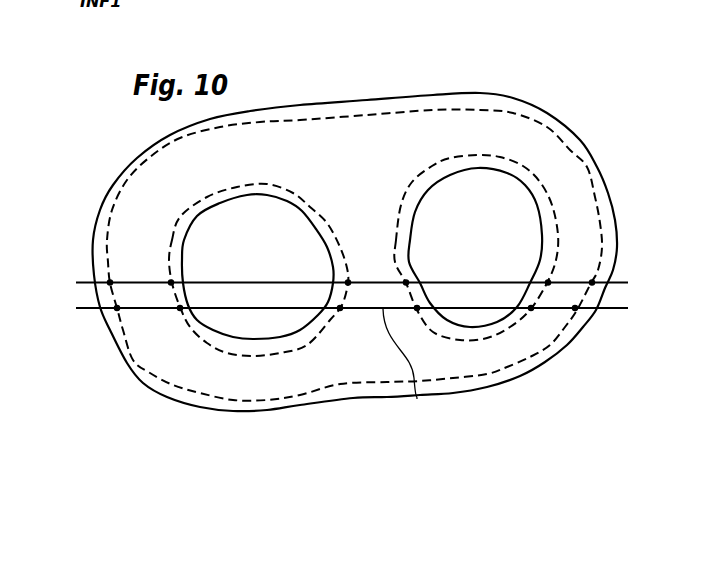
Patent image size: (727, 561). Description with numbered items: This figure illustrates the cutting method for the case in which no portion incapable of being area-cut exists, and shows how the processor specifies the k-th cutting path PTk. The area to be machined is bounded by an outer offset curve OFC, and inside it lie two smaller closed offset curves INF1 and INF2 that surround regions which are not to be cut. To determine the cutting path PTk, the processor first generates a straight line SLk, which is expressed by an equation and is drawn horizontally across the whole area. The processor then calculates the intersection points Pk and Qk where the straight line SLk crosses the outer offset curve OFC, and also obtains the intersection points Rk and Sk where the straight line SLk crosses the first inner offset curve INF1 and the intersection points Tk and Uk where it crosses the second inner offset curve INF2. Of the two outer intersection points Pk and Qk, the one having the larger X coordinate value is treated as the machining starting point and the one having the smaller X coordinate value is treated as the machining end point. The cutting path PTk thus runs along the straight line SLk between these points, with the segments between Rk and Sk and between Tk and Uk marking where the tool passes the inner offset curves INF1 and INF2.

The offset curve OFC is at (281, 397).
The offset curve INF1 is at (292, 188).
The offset curve INF2 is at (431, 168).
The straight line SLk is at (82, 309).
The intersection point Pk is at (129, 319).
The intersection point Rk is at (174, 319).
The intersection point Sk is at (346, 319).
The intersection point Tk is at (410, 319).
The intersection point Uk is at (527, 319).
The intersection point Qk is at (567, 319).
The cutting path PTk is at (410, 368).